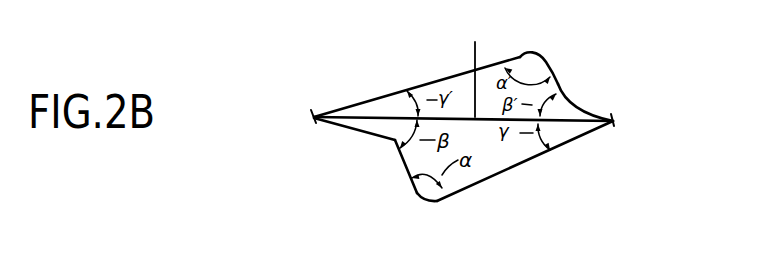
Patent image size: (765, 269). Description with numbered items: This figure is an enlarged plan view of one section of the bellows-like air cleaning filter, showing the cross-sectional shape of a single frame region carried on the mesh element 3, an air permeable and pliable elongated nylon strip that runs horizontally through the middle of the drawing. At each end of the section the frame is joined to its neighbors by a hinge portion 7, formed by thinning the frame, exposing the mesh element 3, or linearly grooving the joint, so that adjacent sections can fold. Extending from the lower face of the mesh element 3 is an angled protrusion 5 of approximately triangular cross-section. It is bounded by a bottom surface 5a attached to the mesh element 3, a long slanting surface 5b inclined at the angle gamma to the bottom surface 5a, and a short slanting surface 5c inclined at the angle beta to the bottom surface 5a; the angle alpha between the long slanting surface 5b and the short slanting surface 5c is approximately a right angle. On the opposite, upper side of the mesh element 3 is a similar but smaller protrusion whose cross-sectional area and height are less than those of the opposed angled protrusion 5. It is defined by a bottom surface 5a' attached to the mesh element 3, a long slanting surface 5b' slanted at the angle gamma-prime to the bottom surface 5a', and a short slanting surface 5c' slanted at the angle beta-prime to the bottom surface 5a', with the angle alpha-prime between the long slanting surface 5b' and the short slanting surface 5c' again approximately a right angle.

The mesh element 3 is at (463, 117).
The angled protrusion 5 is at (530, 67).
The bottom surface 5a is at (477, 181).
The bottom surface 5a' is at (485, 61).
The long slanting surface 5b is at (541, 167).
The long slanting surface 5b' is at (417, 72).
The short slanting surface 5c is at (368, 174).
The short slanting surface 5c' is at (608, 76).
The hinge portion 7 is at (317, 110).